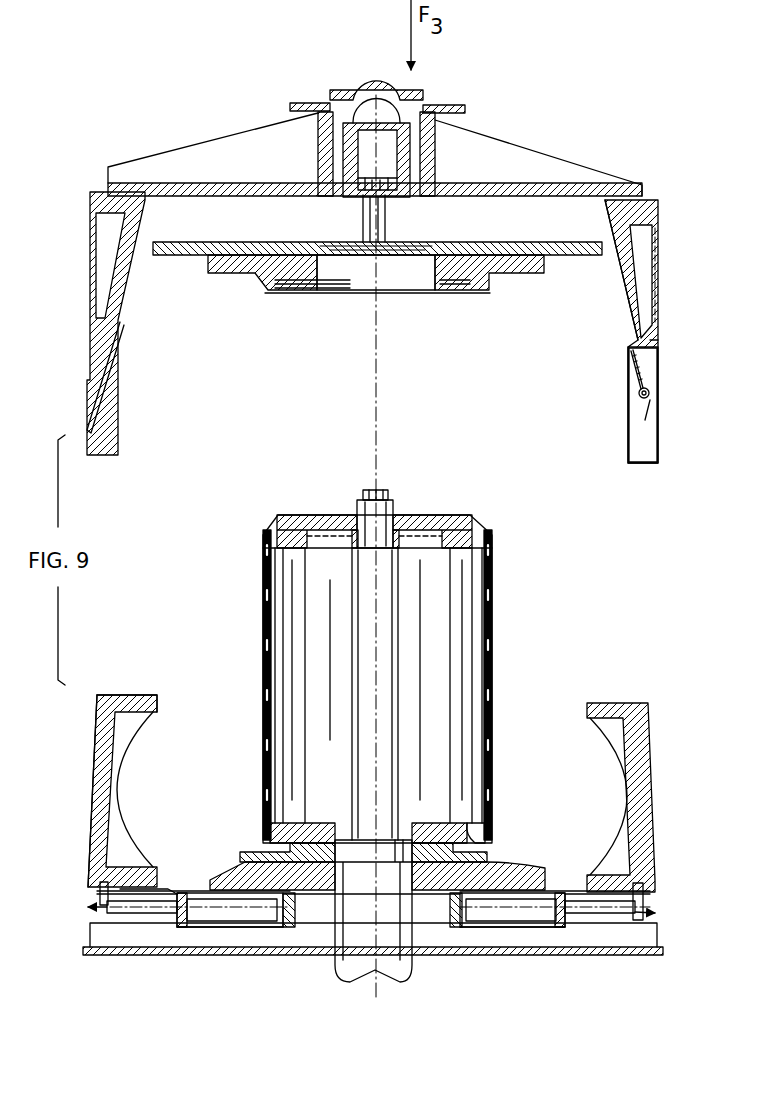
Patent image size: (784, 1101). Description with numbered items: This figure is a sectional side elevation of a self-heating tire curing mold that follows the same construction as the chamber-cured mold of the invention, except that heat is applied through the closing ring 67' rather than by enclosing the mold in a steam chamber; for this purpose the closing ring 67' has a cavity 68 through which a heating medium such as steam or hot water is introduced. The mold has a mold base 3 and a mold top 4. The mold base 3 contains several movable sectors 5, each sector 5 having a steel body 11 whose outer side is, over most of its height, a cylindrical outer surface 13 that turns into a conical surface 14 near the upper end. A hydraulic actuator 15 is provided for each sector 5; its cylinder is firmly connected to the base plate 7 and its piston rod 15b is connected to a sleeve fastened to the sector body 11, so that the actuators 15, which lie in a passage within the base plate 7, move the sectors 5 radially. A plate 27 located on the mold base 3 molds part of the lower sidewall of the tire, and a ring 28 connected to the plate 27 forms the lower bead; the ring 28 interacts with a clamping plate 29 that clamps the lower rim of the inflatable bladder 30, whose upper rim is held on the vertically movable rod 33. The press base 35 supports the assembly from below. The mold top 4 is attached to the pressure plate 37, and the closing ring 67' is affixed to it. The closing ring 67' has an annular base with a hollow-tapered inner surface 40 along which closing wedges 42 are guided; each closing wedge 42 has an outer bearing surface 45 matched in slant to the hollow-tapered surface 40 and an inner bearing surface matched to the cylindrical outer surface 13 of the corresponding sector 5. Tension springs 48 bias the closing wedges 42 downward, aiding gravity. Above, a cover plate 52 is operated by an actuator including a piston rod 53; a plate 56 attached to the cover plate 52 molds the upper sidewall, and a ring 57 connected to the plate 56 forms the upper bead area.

The mold base 3 is at (655, 812).
The mold top 4 is at (495, 127).
The sector 5 is at (161, 706).
The base plate 7 is at (163, 892).
The body 11 is at (88, 765).
The cylindrical outer surface 13 is at (88, 825).
The conical surface 14 is at (97, 714).
The hydraulic actuator 15 is at (237, 917).
The piston rod 15b is at (143, 912).
The plate 27 is at (520, 870).
The ring 28 is at (485, 857).
The clamping plate 29 is at (418, 823).
The inflatable bladder 30 is at (492, 690).
The movable rod 33 is at (394, 688).
The press base 35 is at (568, 958).
The pressure plate 37 is at (464, 186).
The hollow-tapered inner surface 40 is at (622, 277).
The closing wedge 42 is at (628, 421).
The bearing surface 45 is at (658, 420).
The tension spring 48 is at (628, 364).
The cover plate 52 is at (468, 243).
The piston rod 53 is at (386, 222).
The plate 56 is at (232, 275).
The ring 57 is at (270, 294).
The closing ring 67' is at (654, 306).
The cavity 68 is at (640, 253).